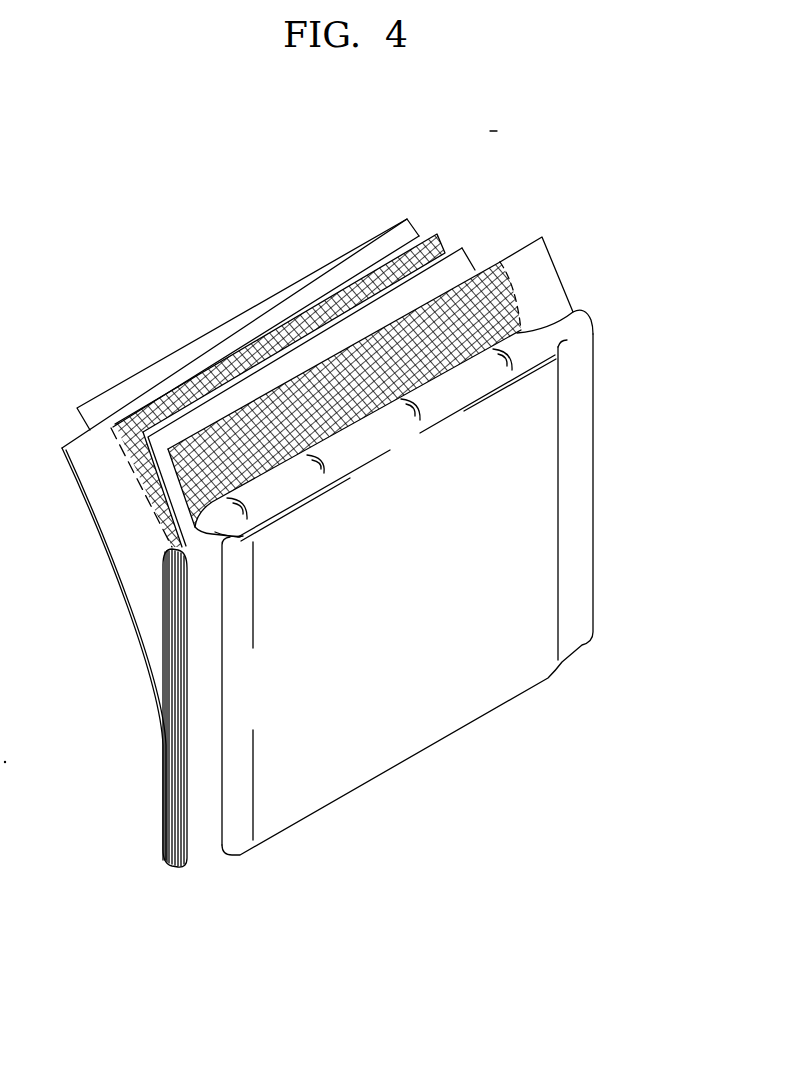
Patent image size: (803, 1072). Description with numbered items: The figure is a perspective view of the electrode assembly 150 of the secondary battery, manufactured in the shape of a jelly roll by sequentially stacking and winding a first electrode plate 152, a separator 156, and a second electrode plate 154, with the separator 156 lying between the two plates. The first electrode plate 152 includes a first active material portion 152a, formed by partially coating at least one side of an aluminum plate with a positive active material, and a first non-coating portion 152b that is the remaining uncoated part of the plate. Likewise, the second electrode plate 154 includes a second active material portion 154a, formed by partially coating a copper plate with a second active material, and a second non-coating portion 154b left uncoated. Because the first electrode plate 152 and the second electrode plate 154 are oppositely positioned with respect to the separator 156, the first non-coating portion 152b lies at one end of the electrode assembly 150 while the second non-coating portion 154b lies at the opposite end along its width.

The electrode assembly 150 is at (590, 211).
The first electrode plate 152 is at (62, 306).
The first active material portion 152a is at (158, 393).
The first non-coating portion 152b is at (97, 440).
The second electrode plate 154 is at (530, 173).
The second active material portion 154a is at (465, 302).
The second non-coating portion 154b is at (525, 260).
The separator 156 is at (340, 335).